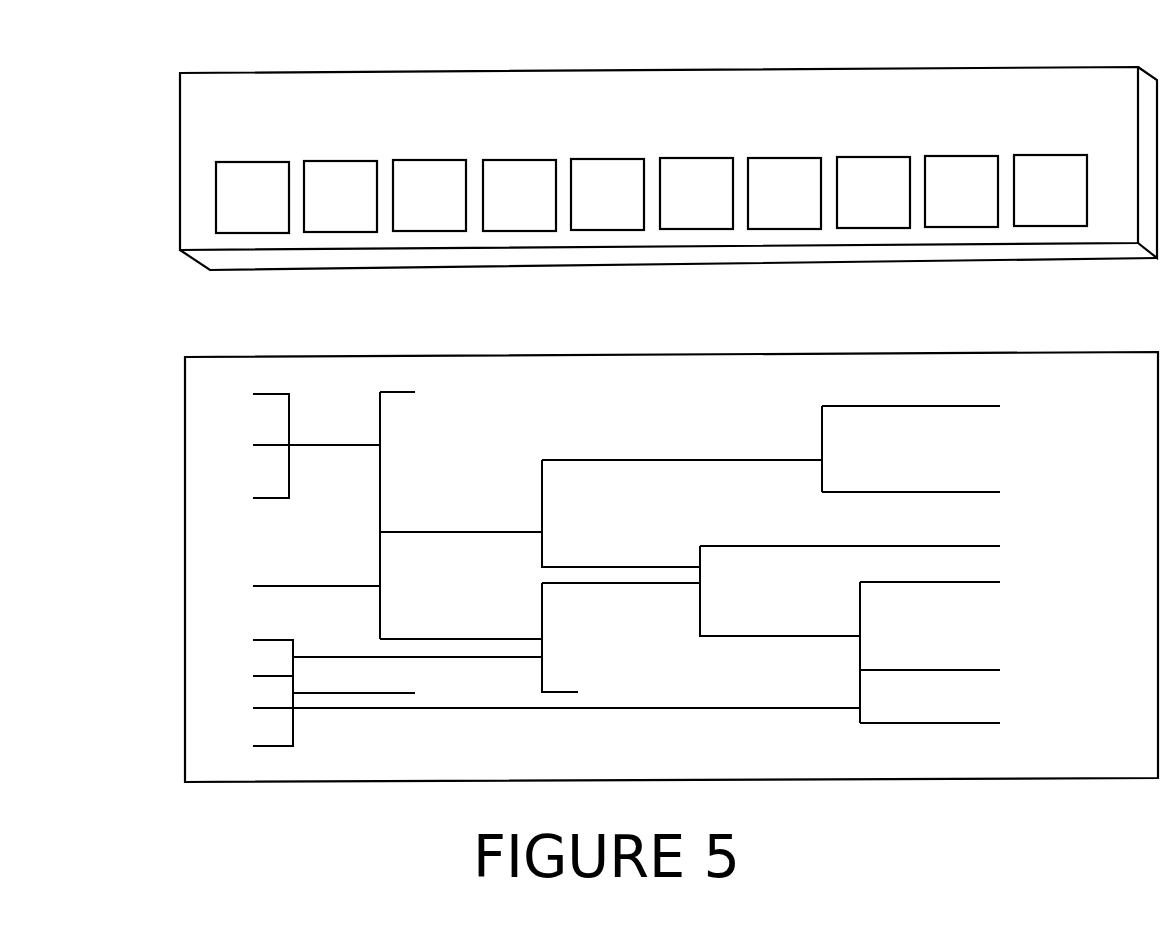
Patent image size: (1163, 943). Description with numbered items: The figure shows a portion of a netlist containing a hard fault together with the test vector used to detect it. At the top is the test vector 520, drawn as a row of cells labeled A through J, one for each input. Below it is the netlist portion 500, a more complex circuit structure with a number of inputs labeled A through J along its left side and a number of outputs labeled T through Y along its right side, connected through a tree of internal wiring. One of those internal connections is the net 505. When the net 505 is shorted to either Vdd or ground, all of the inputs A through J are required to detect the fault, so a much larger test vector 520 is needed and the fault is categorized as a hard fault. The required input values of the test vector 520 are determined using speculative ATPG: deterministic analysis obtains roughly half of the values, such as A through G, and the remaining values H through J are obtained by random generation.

The test vector 520 is at (1013, 67).
The netlist portion 500 is at (671, 542).
The net 505 is at (824, 635).